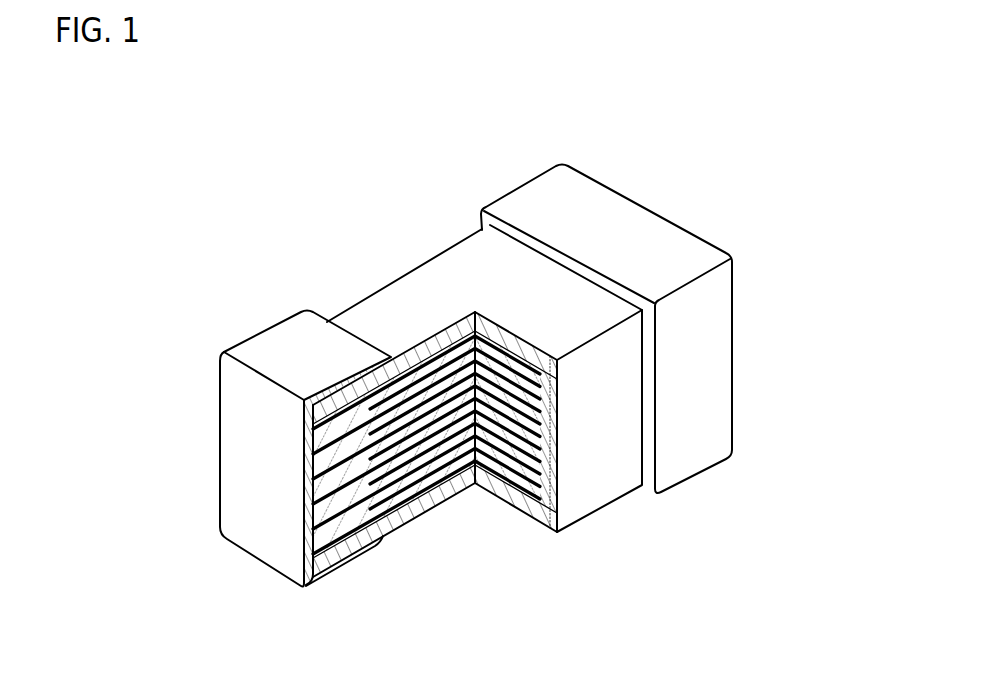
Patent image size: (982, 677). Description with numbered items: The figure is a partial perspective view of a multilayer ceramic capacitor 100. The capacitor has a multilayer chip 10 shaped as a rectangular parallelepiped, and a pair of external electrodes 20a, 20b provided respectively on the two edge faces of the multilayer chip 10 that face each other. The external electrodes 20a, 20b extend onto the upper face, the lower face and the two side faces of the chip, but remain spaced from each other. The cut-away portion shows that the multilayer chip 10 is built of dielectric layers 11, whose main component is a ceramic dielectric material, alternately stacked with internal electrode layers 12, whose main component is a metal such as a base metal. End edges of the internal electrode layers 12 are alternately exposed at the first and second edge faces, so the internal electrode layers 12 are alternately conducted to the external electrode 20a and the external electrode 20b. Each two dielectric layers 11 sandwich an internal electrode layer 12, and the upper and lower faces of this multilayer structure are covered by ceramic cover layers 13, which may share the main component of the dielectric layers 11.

The multilayer ceramic capacitor 100 is at (822, 110).
The multilayer chip 10 is at (355, 300).
The dielectric layer 11 is at (438, 472).
The internal electrode layer 12 is at (452, 498).
The cover layer 13 is at (448, 262).
The external electrode 20a is at (272, 323).
The external electrode 20b is at (522, 200).